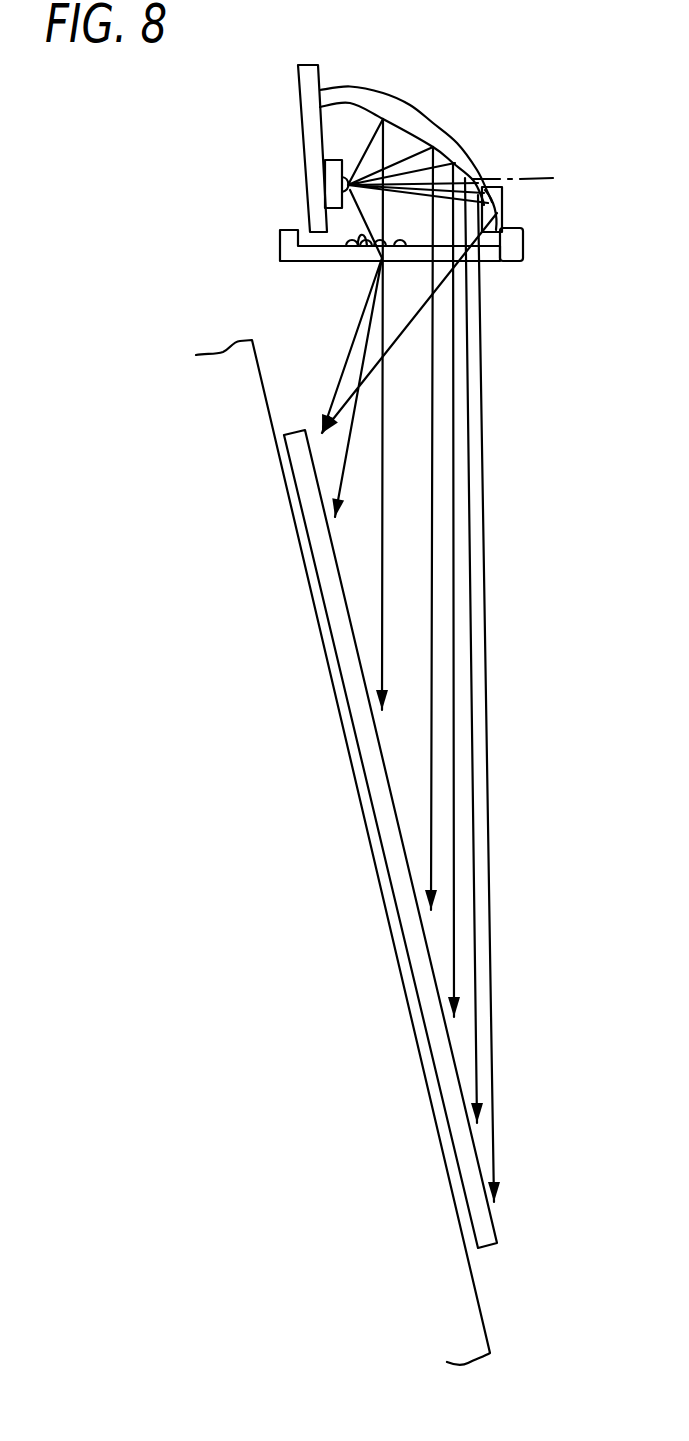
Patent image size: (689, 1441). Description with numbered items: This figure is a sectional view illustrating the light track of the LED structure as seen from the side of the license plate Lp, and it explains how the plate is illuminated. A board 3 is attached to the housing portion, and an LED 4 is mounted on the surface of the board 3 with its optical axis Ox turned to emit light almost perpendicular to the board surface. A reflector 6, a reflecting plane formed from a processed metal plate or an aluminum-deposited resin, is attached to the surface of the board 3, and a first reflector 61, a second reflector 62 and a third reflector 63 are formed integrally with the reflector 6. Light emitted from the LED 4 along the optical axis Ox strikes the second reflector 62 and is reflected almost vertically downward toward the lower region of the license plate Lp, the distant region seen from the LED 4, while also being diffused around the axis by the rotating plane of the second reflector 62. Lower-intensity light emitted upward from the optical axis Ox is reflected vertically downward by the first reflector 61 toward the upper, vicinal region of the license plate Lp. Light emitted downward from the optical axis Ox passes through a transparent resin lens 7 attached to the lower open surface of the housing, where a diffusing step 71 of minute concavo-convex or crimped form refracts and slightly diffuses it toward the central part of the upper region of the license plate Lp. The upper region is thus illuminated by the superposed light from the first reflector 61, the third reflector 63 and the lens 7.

The board 3 is at (305, 118).
The LED 4 is at (337, 190).
The reflector 6 is at (418, 120).
The first reflector 61 is at (445, 158).
The second reflector 62 is at (502, 193).
The third reflector 63 is at (515, 262).
The lens 7 is at (281, 248).
The diffusing step 71 is at (360, 255).
The license plate Lp is at (388, 838).
The optical axis Ox is at (539, 178).